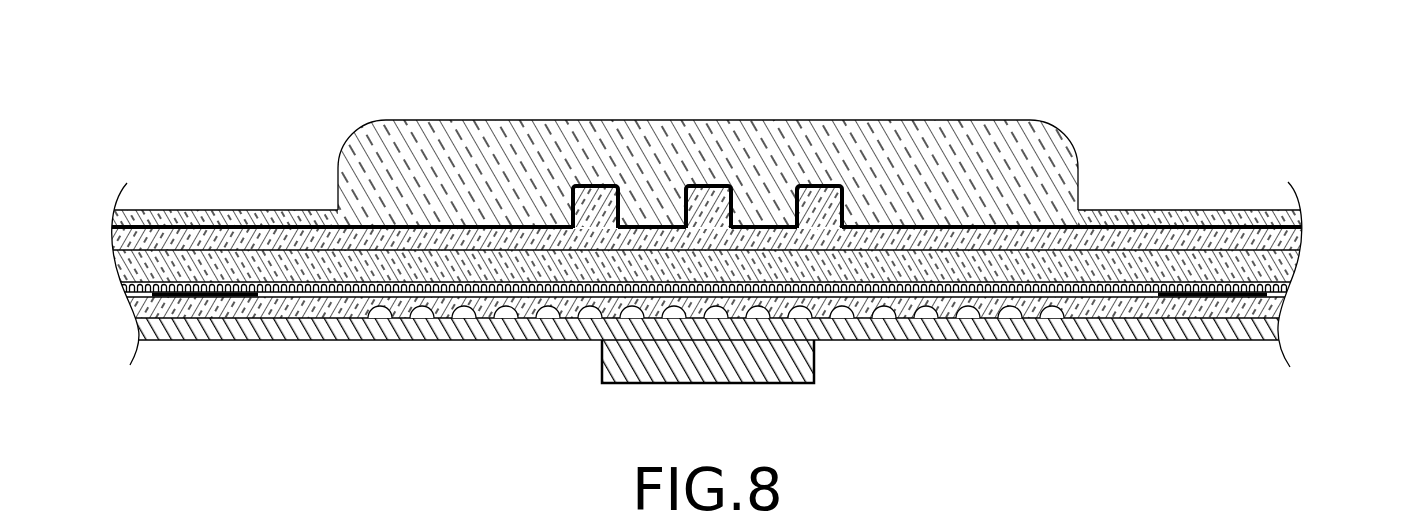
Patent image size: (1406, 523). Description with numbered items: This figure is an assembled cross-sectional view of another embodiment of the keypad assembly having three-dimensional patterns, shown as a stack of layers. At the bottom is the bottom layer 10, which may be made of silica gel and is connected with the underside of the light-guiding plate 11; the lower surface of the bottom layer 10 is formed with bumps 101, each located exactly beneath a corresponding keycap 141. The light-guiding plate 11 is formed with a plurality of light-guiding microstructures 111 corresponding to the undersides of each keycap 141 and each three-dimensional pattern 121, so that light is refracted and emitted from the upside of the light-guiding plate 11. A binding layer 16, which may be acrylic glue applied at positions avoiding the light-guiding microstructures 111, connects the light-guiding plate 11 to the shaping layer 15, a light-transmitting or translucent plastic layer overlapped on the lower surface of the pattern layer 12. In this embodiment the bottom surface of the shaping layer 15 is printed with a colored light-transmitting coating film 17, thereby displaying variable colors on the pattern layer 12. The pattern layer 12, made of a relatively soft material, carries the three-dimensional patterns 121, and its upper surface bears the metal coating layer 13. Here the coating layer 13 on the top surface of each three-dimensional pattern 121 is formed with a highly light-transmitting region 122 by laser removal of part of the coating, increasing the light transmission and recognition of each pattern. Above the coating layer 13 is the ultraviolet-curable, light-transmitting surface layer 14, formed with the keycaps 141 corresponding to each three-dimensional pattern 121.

The bottom layer 10 is at (427, 320).
The bumps 101 is at (617, 360).
The light-guiding plate 11 is at (1108, 320).
The light-guiding microstructures 111 is at (835, 318).
The pattern layer 12 is at (1150, 240).
The three-dimensional pattern 121 is at (548, 198).
The highly light-transmitting region 122 is at (595, 186).
The coating layer 13 is at (278, 224).
The surface layer 14 is at (188, 215).
The keycaps 141 is at (927, 142).
The shaping layer 15 is at (305, 273).
The binding layer 16 is at (1247, 274).
The colored light-transmitting coating film 17 is at (480, 286).